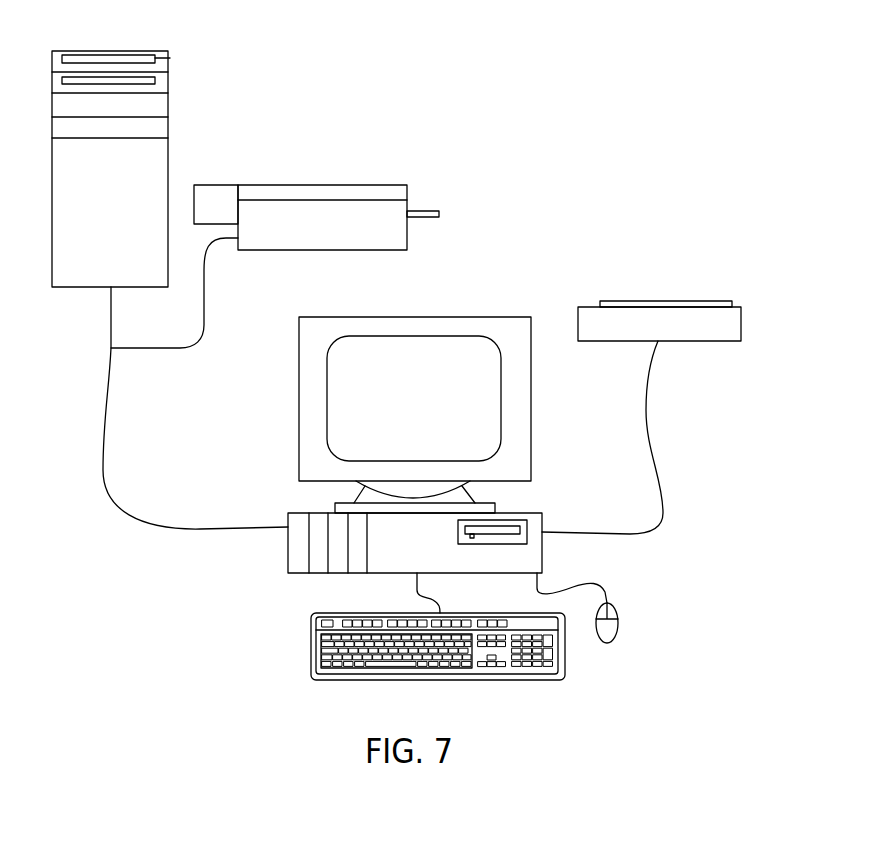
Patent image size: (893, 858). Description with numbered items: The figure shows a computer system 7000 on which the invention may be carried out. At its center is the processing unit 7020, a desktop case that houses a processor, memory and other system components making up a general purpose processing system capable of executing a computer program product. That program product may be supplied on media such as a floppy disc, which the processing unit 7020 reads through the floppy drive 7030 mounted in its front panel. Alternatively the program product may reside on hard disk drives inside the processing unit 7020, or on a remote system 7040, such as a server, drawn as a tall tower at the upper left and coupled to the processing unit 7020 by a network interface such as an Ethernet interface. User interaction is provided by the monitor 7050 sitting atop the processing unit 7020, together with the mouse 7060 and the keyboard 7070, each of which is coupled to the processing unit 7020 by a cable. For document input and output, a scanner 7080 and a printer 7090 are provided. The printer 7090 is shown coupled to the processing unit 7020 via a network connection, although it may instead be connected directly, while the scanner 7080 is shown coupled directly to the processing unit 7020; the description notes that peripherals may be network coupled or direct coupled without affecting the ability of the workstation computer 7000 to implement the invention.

The computer system 7000 is at (529, 111).
The processing unit 7020 is at (288, 558).
The floppy drive 7030 is at (527, 532).
The remote system 7040 is at (168, 163).
The monitor 7050 is at (487, 317).
The mouse 7060 is at (618, 633).
The keyboard 7070 is at (311, 646).
The scanner 7080 is at (687, 301).
The printer 7090 is at (365, 185).